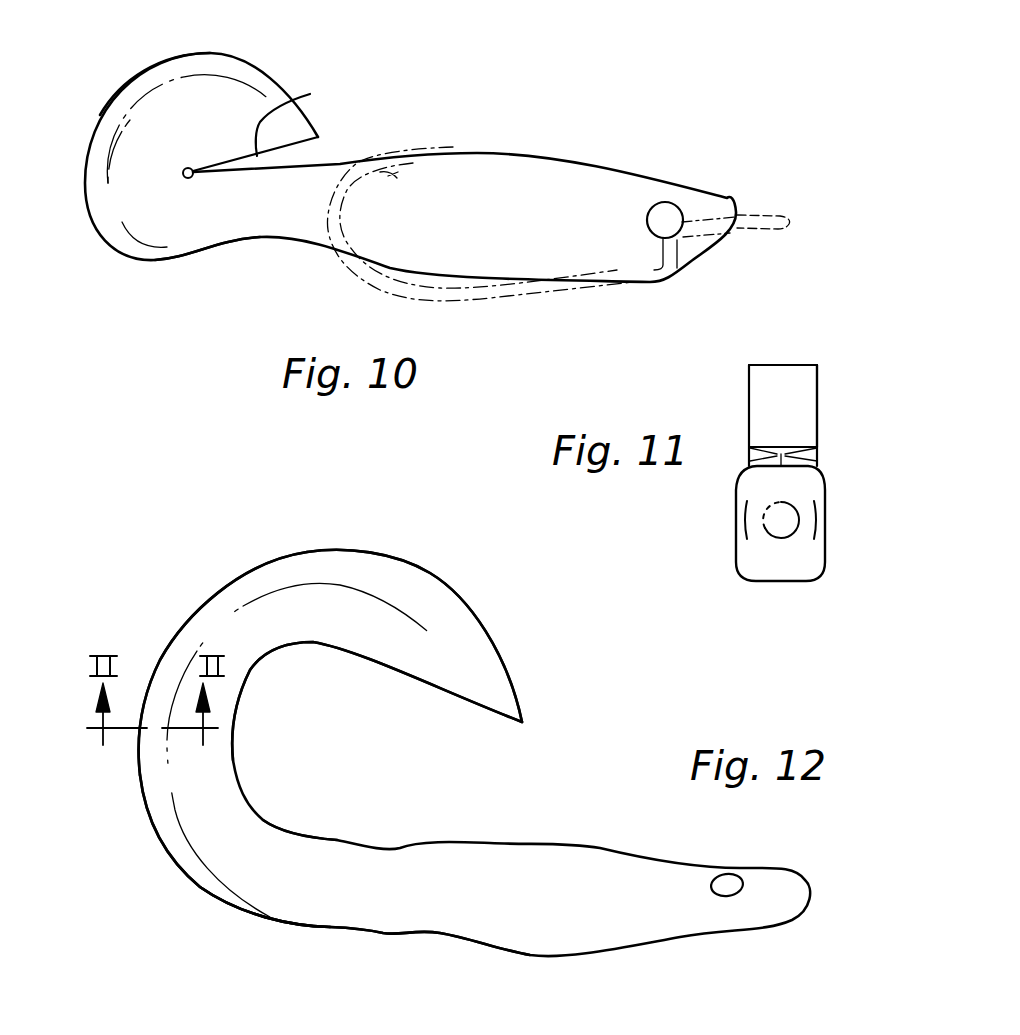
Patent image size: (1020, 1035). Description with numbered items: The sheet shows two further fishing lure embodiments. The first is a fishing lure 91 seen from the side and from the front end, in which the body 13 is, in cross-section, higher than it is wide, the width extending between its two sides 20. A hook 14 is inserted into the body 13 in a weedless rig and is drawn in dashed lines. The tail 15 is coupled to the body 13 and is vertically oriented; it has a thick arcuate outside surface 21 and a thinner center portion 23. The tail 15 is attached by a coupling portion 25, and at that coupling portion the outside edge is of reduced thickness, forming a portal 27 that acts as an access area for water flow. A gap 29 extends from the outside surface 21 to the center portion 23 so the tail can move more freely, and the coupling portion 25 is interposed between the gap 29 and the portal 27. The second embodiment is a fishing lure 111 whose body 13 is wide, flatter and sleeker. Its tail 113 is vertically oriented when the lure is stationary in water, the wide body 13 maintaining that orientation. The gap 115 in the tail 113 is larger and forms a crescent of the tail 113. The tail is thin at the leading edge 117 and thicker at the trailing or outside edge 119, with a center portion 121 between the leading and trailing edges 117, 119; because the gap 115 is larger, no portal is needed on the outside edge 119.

In FIG. 12, the body 13 is at (682, 892).
In FIG. 10, the hook 14 is at (765, 215).
In FIG. 10, the tail 15 is at (248, 60).
In FIG. 11, the tail 15 is at (820, 385).
In FIG. 11, the sides 20 is at (800, 420).
In FIG. 10, the outside surface 21 is at (122, 87).
In FIG. 11, the outside surface 21 is at (782, 377).
In FIG. 10, the center portion 23 is at (137, 148).
In FIG. 10, the coupling portion 25 is at (313, 183).
In FIG. 12, the coupling portion 25 is at (370, 870).
In FIG. 10, the portal 27 is at (210, 245).
In FIG. 10, the gap 29 is at (300, 120).
In FIG. 11, the gap 29 is at (817, 455).
In FIG. 10, the fishing lure 91 is at (578, 177).
In FIG. 11, the fishing lure 91 is at (737, 540).
In FIG. 12, the fishing lure 111 is at (587, 812).
In FIG. 12, the tail 113 is at (402, 625).
In FIG. 12, the gap 115 is at (258, 837).
In FIG. 12, the leading edge 117 is at (247, 682).
In FIG. 12, the trailing edge 119 is at (193, 607).
In FIG. 12, the center portion 121 is at (220, 853).